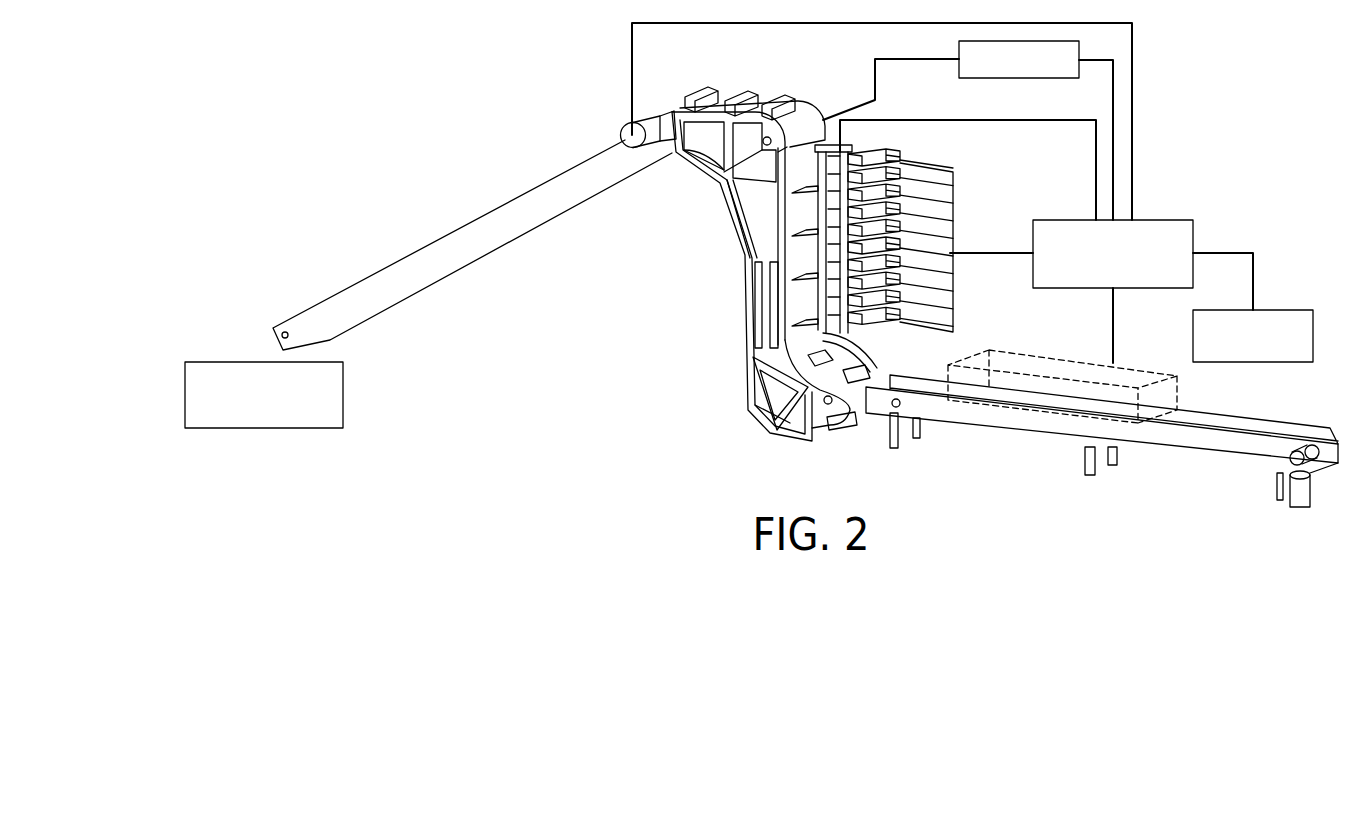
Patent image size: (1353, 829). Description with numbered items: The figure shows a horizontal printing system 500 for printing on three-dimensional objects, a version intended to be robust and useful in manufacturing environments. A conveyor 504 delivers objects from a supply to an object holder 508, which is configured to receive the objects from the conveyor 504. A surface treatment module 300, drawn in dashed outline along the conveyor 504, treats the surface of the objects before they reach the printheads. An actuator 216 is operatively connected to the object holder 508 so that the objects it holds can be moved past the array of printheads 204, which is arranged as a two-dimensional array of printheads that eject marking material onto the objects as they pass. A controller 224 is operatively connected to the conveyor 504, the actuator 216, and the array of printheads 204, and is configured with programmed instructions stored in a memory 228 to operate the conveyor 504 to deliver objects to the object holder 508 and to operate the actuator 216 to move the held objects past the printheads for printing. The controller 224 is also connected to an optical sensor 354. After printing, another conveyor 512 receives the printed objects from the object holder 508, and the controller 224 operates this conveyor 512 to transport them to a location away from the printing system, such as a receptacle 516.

The array of printheads 204 is at (888, 157).
The actuator 216 is at (957, 67).
The controller 224 is at (1160, 220).
The memory 228 is at (1278, 310).
The surface treatment module 300 is at (1127, 376).
The optical sensor 354 is at (822, 150).
The printing system 500 is at (1007, 118).
The conveyor 504 is at (1232, 420).
The object holder 508 is at (845, 362).
The conveyor 512 is at (478, 217).
The receptacle 516 is at (343, 393).